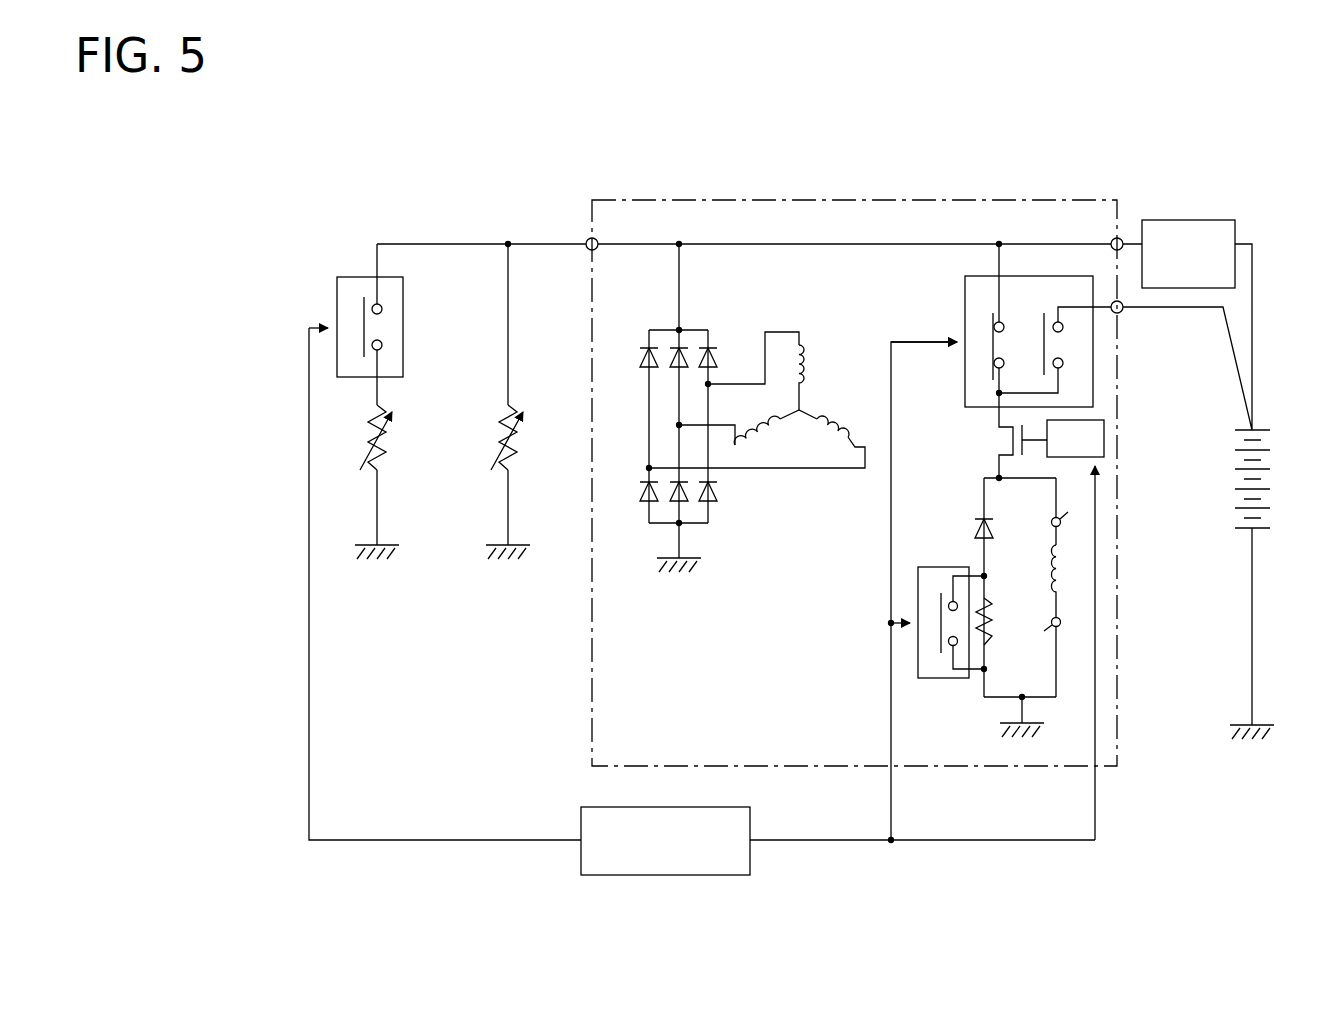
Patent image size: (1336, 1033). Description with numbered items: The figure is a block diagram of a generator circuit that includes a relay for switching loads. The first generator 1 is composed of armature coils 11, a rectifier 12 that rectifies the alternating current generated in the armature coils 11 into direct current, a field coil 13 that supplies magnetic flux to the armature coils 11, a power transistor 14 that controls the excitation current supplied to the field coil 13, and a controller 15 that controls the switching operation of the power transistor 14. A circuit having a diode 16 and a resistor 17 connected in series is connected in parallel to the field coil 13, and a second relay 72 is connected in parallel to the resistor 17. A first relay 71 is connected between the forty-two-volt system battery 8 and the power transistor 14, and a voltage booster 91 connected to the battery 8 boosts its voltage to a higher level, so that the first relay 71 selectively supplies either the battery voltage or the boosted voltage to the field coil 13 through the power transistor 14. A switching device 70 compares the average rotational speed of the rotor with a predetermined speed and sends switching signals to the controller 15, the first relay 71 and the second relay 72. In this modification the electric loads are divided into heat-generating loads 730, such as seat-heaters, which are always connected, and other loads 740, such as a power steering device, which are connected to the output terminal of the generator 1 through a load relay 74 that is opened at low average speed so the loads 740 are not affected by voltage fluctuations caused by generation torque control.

The first generator 1 is at (758, 200).
The battery 8 is at (1262, 428).
The armature coils 11 is at (808, 350).
The rectifier 12 is at (693, 330).
The field coil 13 is at (1066, 578).
The power transistor 14 is at (1010, 446).
The controller 15 is at (1104, 437).
The diode 16 is at (976, 527).
The resistor 17 is at (990, 622).
The switching device 70 is at (688, 875).
The first relay 71 is at (1033, 276).
The second relay 72 is at (947, 678).
The load relay 74 is at (337, 290).
The voltage booster 91 is at (1192, 220).
The heat-generating loads 730 is at (519, 448).
The other loads 740 is at (387, 448).